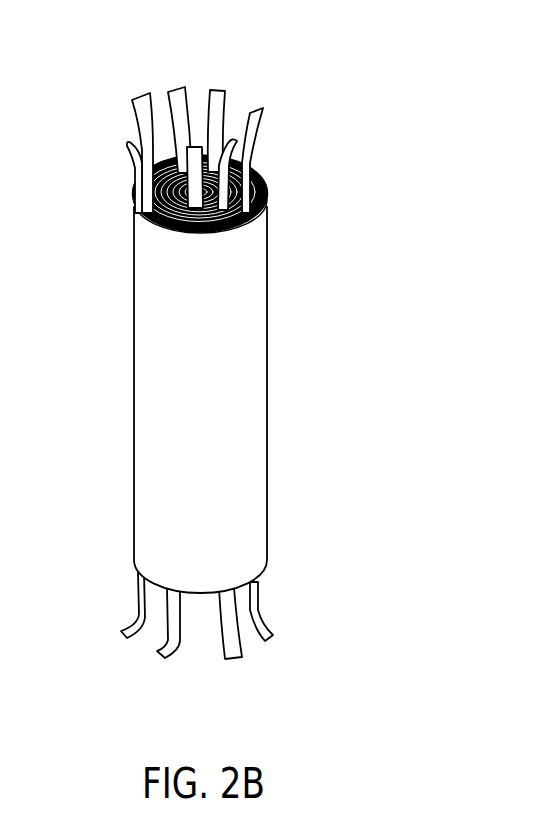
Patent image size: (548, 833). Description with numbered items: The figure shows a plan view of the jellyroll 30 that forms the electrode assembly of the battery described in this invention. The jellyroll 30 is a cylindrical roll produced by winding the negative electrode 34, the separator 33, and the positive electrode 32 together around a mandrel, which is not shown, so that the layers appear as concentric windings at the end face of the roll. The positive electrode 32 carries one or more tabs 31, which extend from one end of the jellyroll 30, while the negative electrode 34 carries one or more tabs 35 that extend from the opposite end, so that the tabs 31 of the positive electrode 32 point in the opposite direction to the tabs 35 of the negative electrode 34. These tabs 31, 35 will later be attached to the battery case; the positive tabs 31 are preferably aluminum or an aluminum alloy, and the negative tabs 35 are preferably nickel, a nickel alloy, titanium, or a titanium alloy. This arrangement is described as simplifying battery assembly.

The jellyroll 30 is at (325, 393).
The tabs of the positive electrode 31 is at (265, 110).
The positive electrode 32 is at (265, 180).
The separator 33 is at (267, 193).
The negative electrode 34 is at (267, 202).
The tabs of the negative electrode 35 is at (162, 655).